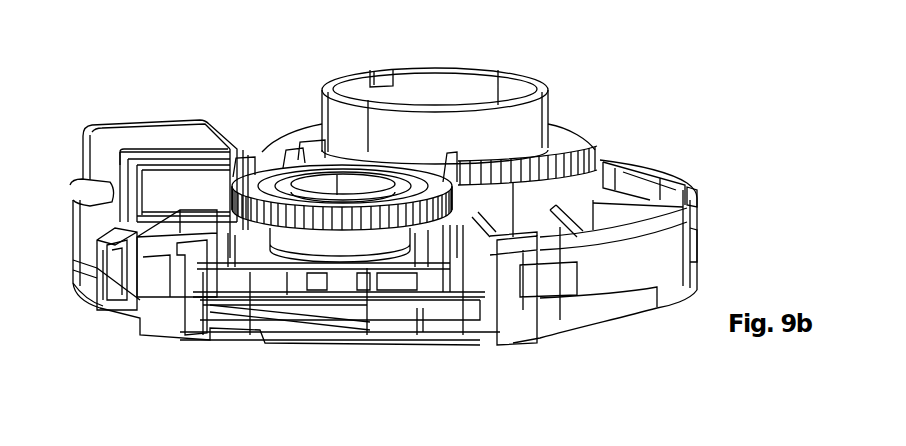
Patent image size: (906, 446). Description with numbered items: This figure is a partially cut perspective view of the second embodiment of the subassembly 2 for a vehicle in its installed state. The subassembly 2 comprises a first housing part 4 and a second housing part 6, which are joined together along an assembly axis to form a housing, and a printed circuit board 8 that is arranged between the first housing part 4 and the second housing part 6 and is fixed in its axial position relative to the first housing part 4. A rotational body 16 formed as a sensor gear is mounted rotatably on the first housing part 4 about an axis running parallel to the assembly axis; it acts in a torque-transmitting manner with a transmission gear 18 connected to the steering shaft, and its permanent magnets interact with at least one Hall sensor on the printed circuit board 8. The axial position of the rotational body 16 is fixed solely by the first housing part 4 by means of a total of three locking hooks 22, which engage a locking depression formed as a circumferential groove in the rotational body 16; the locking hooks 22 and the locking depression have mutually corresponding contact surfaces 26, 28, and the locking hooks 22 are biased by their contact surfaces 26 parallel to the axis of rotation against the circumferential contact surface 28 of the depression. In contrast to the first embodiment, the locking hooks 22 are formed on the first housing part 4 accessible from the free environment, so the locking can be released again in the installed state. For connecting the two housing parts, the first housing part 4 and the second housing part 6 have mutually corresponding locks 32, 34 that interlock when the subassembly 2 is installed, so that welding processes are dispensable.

The subassembly 2 is at (114, 80).
The first housing part 4 is at (614, 214).
The second housing part 6 is at (670, 292).
The printed circuit board 8 is at (418, 298).
The rotational body 16 is at (352, 178).
The transmission gear 18 is at (563, 140).
The locking hooks 22 is at (252, 176).
The contact surfaces 26 is at (256, 188).
The contact surface 28 is at (292, 158).
The locks 32 is at (695, 232).
The locks 34 is at (695, 212).